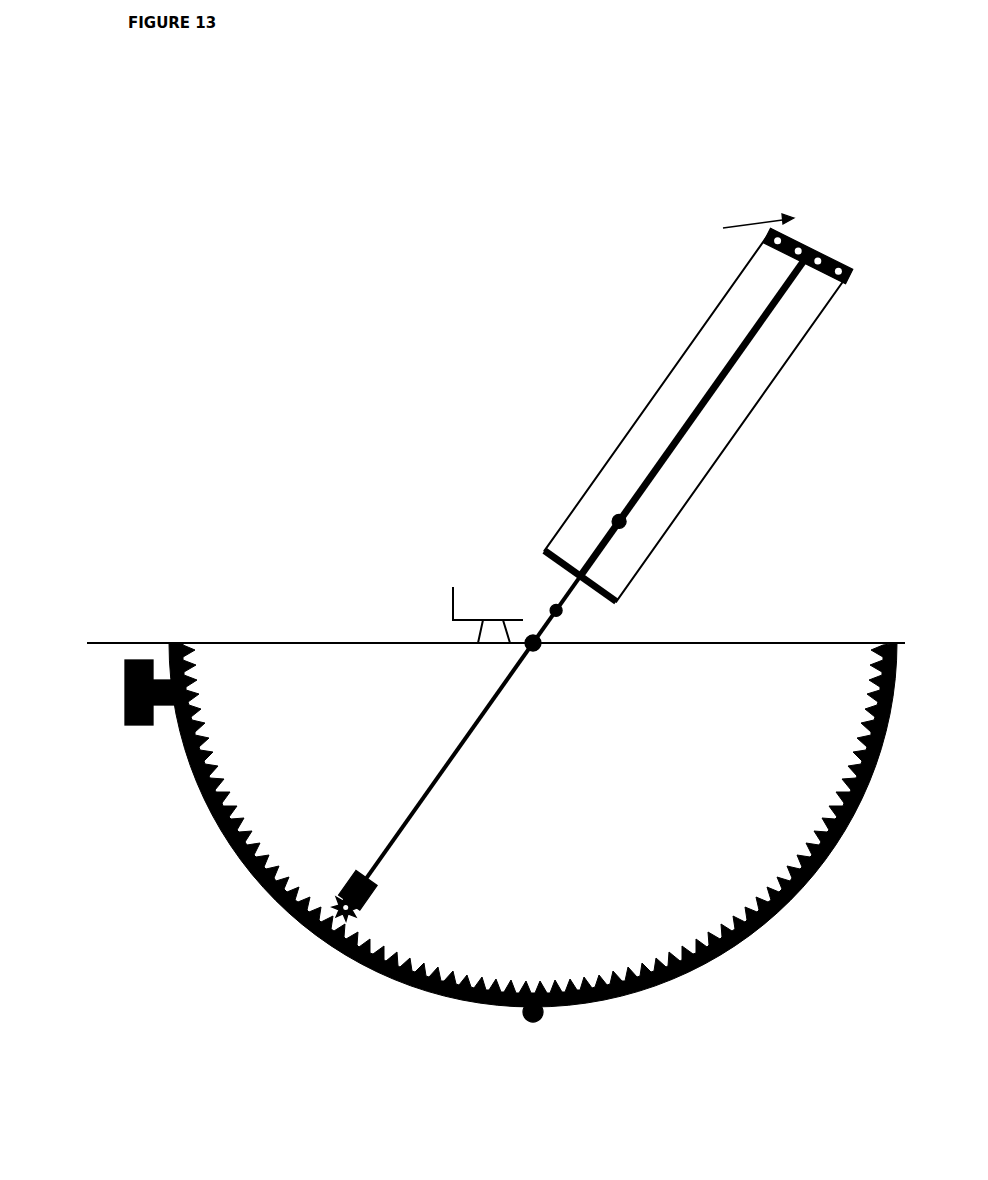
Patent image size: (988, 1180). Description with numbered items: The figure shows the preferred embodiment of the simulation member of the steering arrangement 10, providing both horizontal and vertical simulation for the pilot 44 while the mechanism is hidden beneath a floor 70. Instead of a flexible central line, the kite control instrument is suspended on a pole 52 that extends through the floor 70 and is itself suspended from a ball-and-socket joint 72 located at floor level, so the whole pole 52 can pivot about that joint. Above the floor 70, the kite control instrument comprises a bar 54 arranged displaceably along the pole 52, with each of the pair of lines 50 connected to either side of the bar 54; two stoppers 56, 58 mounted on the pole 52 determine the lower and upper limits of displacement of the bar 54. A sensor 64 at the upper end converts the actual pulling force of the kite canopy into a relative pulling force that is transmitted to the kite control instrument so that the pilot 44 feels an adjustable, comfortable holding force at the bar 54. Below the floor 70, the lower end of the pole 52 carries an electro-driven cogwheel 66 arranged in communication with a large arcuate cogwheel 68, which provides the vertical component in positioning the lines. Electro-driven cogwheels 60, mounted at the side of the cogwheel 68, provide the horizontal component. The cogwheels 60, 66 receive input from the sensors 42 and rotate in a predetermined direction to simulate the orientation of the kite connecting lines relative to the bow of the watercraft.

The steering arrangement 10 is at (264, 1026).
The sensors 42 is at (123, 688).
The pilot 44 is at (468, 600).
The pair of lines 50 is at (640, 422).
The pole 52 is at (752, 338).
The bar 54 is at (602, 600).
The stopper 56 is at (563, 613).
The stopper 58 is at (620, 518).
The electro-driven cogwheels 60 is at (160, 707).
The sensor 64 is at (813, 228).
The electro-driven cogwheel 66 is at (365, 900).
The cogwheel 68 is at (240, 863).
The floor 70 is at (313, 643).
The ball-and-socket joint 72 is at (543, 650).